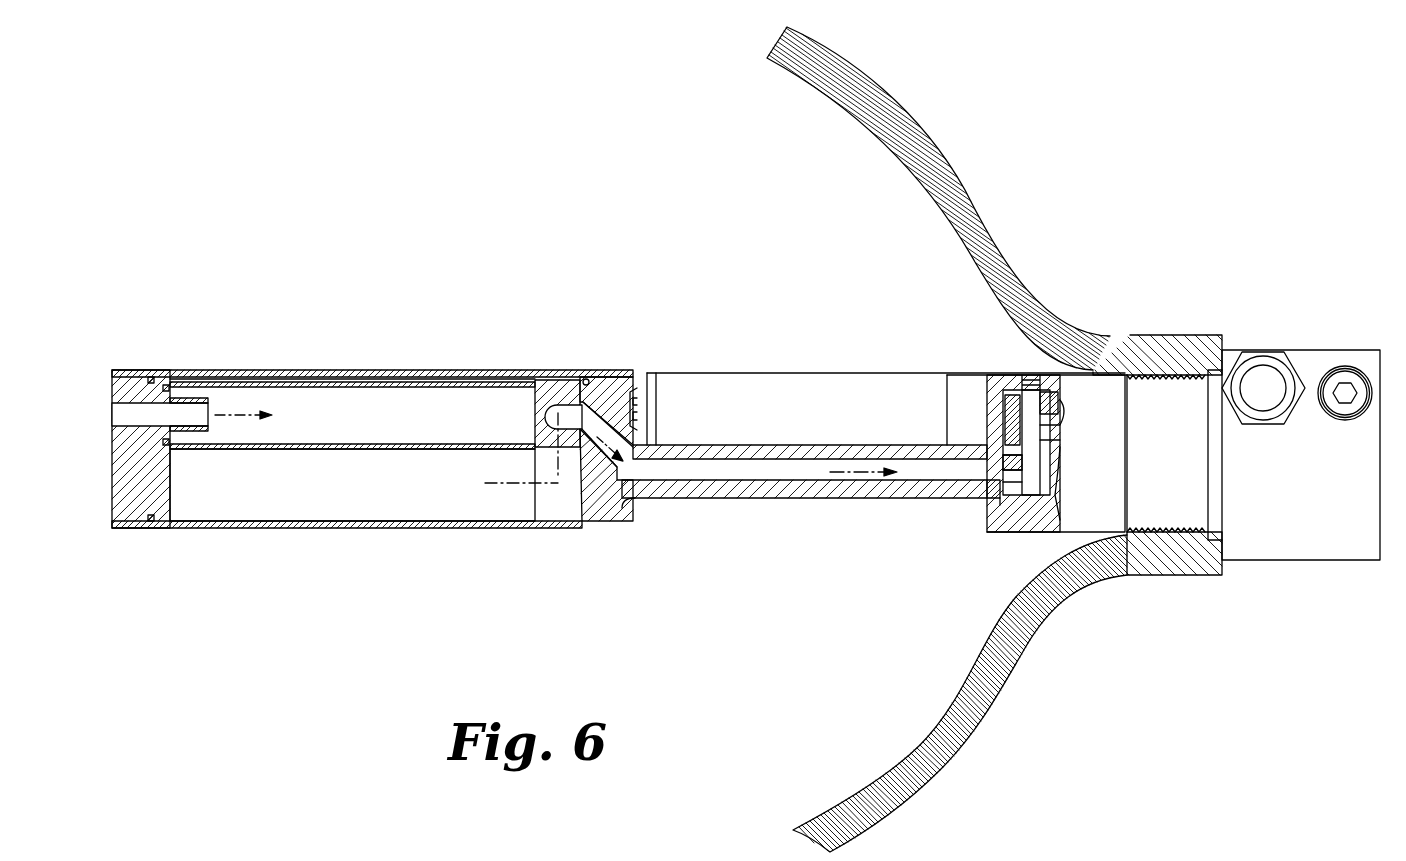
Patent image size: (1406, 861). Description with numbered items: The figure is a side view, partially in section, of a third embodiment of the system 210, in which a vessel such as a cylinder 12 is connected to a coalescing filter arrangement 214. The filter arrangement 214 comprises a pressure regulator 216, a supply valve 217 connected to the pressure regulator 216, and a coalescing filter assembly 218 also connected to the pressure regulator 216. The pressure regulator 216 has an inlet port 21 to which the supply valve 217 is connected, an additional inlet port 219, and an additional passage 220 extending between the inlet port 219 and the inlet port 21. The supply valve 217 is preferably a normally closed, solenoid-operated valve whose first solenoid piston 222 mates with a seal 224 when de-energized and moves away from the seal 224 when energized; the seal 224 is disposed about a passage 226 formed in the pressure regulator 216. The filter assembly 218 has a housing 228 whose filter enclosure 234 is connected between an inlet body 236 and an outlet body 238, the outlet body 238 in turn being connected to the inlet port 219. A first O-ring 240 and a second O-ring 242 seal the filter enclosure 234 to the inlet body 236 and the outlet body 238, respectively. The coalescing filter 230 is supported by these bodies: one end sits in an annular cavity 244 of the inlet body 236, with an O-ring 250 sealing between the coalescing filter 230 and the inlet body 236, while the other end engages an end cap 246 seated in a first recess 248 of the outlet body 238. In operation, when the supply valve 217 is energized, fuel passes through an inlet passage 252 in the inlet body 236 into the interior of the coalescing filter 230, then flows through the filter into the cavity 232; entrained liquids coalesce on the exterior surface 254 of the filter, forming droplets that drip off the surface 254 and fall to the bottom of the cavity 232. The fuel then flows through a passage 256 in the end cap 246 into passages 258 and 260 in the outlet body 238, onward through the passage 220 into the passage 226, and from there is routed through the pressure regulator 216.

The cylinder 12 is at (912, 103).
The inlet port 21 is at (990, 398).
The system 210 is at (1077, 177).
The coalescing filter arrangement 214 is at (372, 605).
The pressure regulator 216 is at (1297, 350).
The supply valve 217 is at (730, 373).
The coalescing filter assembly 218 is at (497, 544).
The inlet port 219 is at (962, 503).
The passage 220 is at (992, 527).
The first solenoid piston 222 is at (1022, 378).
The seal 224 is at (1042, 385).
The passage 226 is at (1058, 425).
The housing 228 is at (266, 528).
The coalescing filter 230 is at (333, 383).
The cavity 232 is at (418, 508).
The filter enclosure 234 is at (316, 528).
The inlet body 236 is at (122, 509).
The outlet body 238 is at (640, 530).
The first O-ring 240 is at (148, 377).
The second O-ring 242 is at (590, 382).
The annular cavity 244 is at (172, 445).
The end cap 246 is at (557, 383).
The first recess 248 is at (560, 452).
The O-ring 250 is at (167, 384).
The inlet passage 252 is at (130, 412).
The exterior surface 254 is at (365, 378).
The passage 256 is at (560, 403).
The passage 258 is at (598, 432).
The passage 260 is at (722, 480).